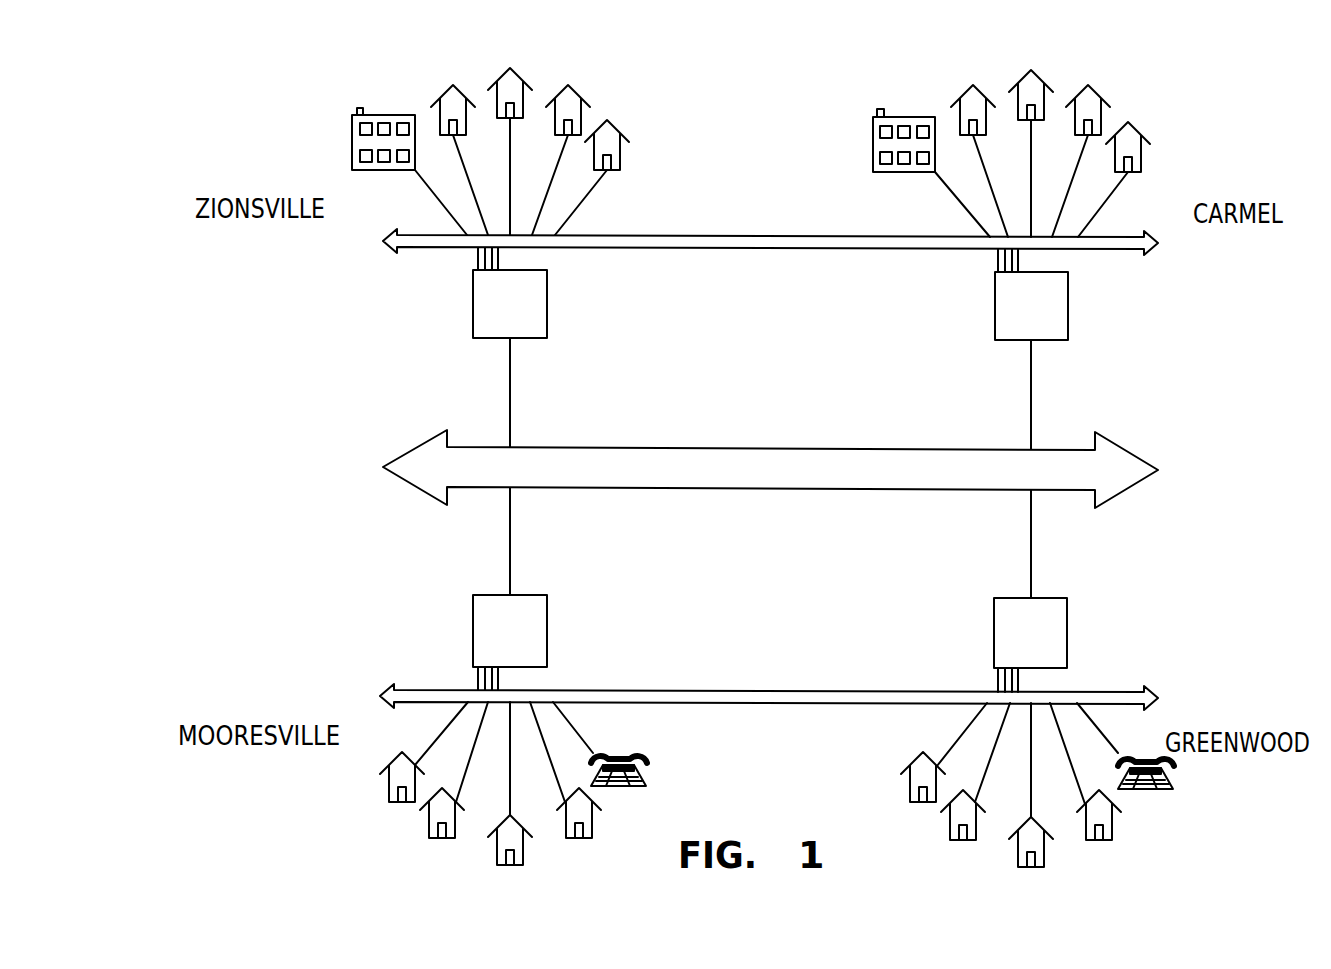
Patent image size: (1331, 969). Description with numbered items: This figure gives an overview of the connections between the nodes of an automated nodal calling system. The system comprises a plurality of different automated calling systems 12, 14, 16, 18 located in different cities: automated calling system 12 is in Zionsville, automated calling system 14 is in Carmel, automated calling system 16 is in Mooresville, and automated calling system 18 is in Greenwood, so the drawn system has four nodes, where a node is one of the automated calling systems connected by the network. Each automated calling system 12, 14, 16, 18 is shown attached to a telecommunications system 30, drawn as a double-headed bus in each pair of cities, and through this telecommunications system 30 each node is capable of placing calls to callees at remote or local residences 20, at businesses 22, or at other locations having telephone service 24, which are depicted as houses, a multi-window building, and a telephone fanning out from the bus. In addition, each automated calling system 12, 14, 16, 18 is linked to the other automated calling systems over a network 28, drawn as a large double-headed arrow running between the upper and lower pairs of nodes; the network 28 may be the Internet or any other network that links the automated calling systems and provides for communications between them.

The automated calling system 12 is at (547, 305).
The automated calling system 14 is at (1068, 308).
The automated calling system 16 is at (547, 630).
The automated calling system 18 is at (1067, 633).
The residences 20 is at (581, 98).
The businesses 22 is at (352, 142).
The other locations having telephone service 24 is at (640, 787).
The network 28 is at (786, 481).
The telecommunications system 30 is at (772, 248).